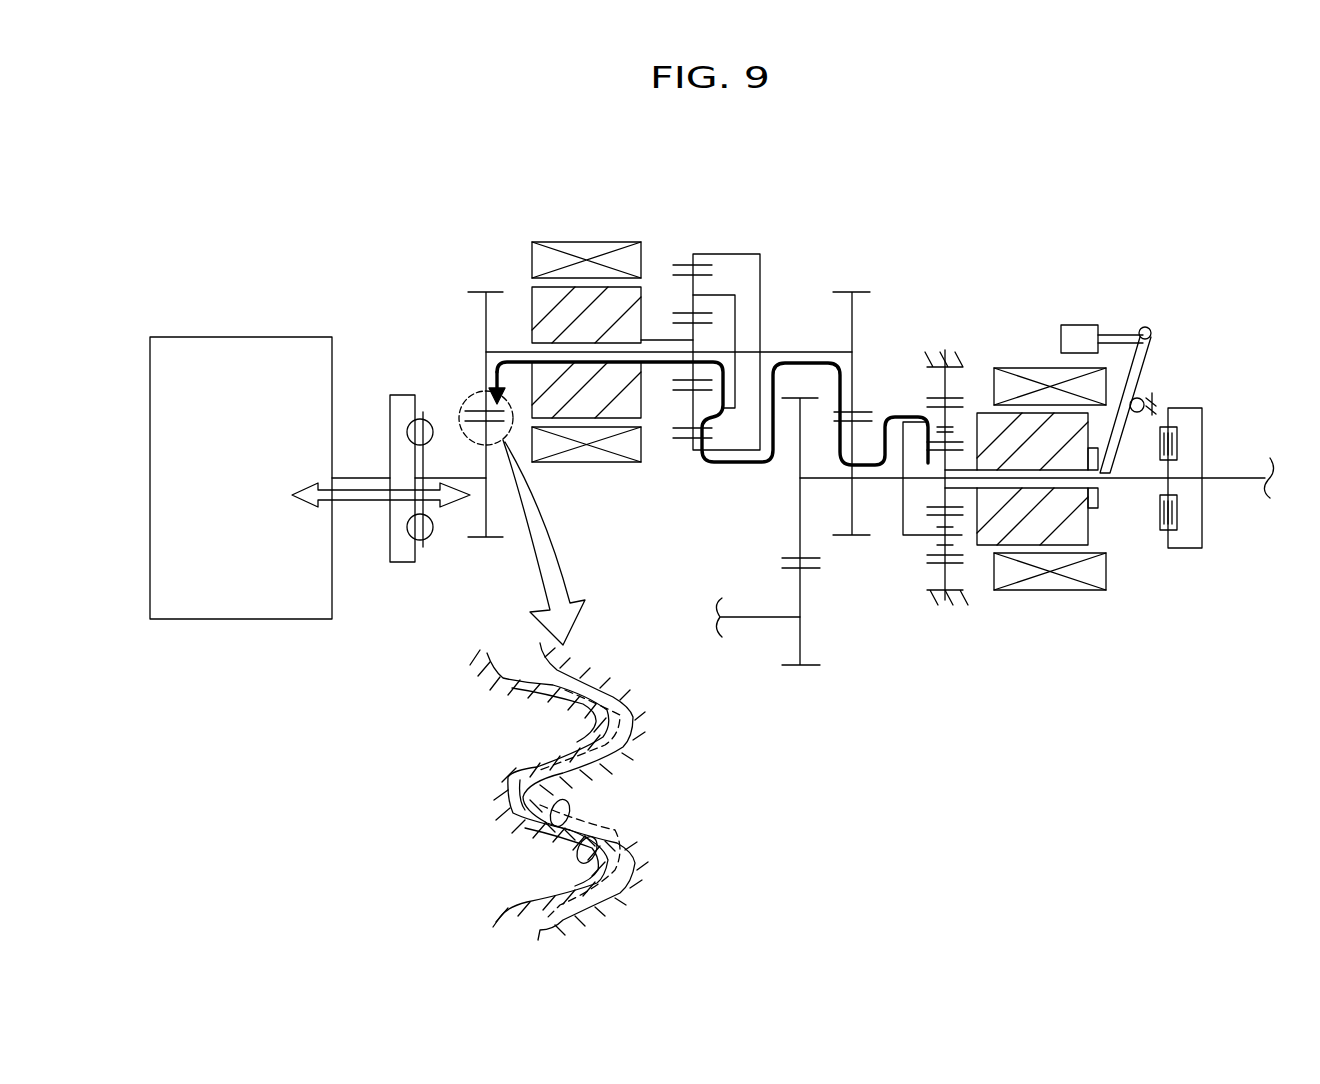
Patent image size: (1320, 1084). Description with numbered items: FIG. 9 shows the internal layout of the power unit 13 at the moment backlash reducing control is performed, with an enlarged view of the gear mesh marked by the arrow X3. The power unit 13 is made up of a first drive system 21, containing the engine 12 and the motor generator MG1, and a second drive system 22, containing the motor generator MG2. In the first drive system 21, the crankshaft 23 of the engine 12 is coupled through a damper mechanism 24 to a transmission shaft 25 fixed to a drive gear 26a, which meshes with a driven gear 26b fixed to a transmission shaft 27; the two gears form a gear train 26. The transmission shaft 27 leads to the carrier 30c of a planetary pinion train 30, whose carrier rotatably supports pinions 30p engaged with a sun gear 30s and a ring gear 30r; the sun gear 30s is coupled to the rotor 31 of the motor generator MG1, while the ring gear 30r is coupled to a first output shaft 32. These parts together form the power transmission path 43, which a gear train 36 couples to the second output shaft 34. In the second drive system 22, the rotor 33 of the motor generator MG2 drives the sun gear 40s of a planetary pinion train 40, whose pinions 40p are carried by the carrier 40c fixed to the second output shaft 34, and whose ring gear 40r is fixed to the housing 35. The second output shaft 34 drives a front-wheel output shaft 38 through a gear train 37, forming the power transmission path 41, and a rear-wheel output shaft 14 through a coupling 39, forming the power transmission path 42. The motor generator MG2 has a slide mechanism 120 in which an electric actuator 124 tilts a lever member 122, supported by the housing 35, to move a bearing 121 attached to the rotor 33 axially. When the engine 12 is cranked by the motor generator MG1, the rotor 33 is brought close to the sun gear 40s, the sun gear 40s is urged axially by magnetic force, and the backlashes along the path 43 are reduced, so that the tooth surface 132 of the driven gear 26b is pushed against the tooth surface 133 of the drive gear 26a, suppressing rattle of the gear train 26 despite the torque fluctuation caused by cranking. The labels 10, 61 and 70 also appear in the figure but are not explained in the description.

The vehicle 10 is at (185, 142).
The power unit 13 is at (195, 205).
The engine 12 is at (222, 336).
The first drive system 21 is at (372, 250).
The second drive system 22 is at (1155, 640).
The crankshaft 23 is at (370, 476).
The damper mechanism 24 is at (402, 394).
The transmission shaft 25 is at (455, 477).
The gear train 26 is at (474, 276).
The drive gear 26a is at (486, 540).
The driven gear 26b is at (492, 291).
The transmission shaft 27 is at (503, 352).
The planetary pinion train 30 is at (742, 232).
The sun gear 30s is at (690, 316).
The pinions 30p is at (692, 262).
The carrier 30c is at (737, 303).
The ring gear 30r is at (692, 441).
The rotor 31 is at (600, 287).
The stator of MG1 61 is at (602, 464).
The motor generator MG1 is at (554, 225).
The first output shaft 32 is at (812, 350).
The arrow X3 is at (800, 362).
The gear train 36 is at (857, 275).
The power transmission path 43 is at (830, 333).
The second output shaft 34 is at (876, 480).
The rear-wheel output shaft 14 is at (1238, 476).
The power transmission path 42 is at (1232, 500).
The front-wheel output shaft 38 is at (748, 615).
The power transmission path 41 is at (755, 630).
The gear train 37 is at (806, 685).
The planetary pinion train 40 is at (938, 328).
The sun gear 40s is at (958, 445).
The pinions 40p is at (928, 398).
The carrier 40c is at (910, 538).
The ring gear 40r is at (930, 566).
The housing 35 is at (958, 605).
The rotor 33 is at (1030, 547).
The stator of MG2 70 is at (1065, 592).
The motor generator MG2 is at (1028, 345).
The bearing 121 is at (1100, 510).
The lever member 122 is at (1143, 360).
The electric actuator 124 is at (1080, 324).
The slide mechanism 120 is at (1168, 315).
The coupling 39 is at (1188, 550).
The tooth surface 132 is at (592, 846).
The tooth surface 133 is at (552, 826).